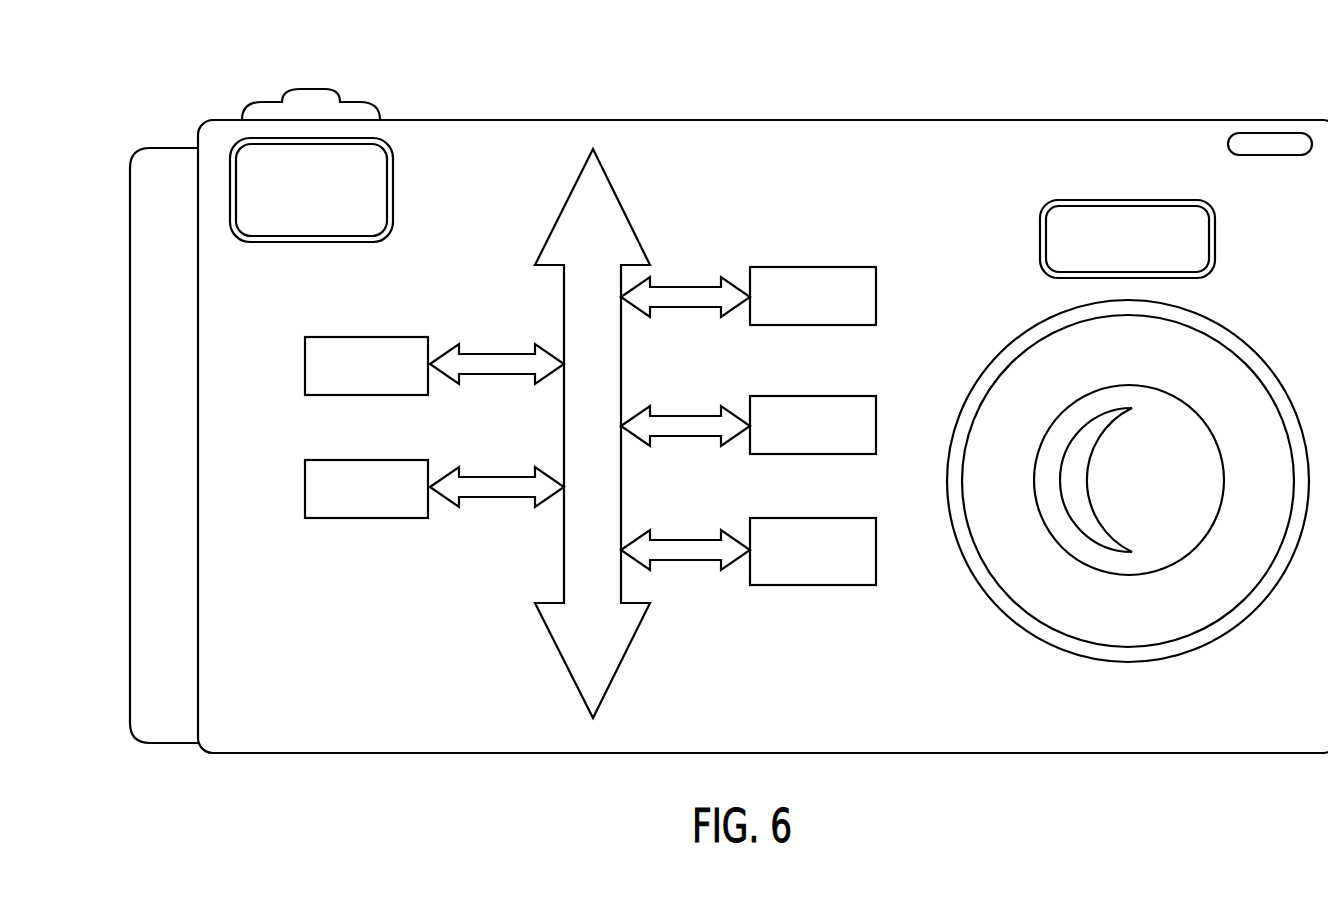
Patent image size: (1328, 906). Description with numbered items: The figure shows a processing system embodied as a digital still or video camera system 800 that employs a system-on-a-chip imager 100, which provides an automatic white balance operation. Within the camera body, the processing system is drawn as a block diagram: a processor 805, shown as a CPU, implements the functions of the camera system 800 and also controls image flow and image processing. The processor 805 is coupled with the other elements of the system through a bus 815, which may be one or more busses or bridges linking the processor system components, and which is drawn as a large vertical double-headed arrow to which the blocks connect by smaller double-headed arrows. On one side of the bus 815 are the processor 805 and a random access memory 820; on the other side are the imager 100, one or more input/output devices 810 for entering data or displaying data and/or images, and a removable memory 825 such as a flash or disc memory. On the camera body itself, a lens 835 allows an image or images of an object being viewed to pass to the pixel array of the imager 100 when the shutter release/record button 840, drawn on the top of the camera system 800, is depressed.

The digital still or video camera system 800 is at (1172, 74).
The shutter release/record button 840 is at (325, 93).
The lens 835 is at (1212, 322).
The bus 815 is at (568, 667).
The processor 805 is at (305, 373).
The random access memory 820 is at (305, 497).
The system-on-a-chip imager 100 is at (878, 295).
The input/output device 810 is at (878, 430).
The removable memory 825 is at (878, 553).